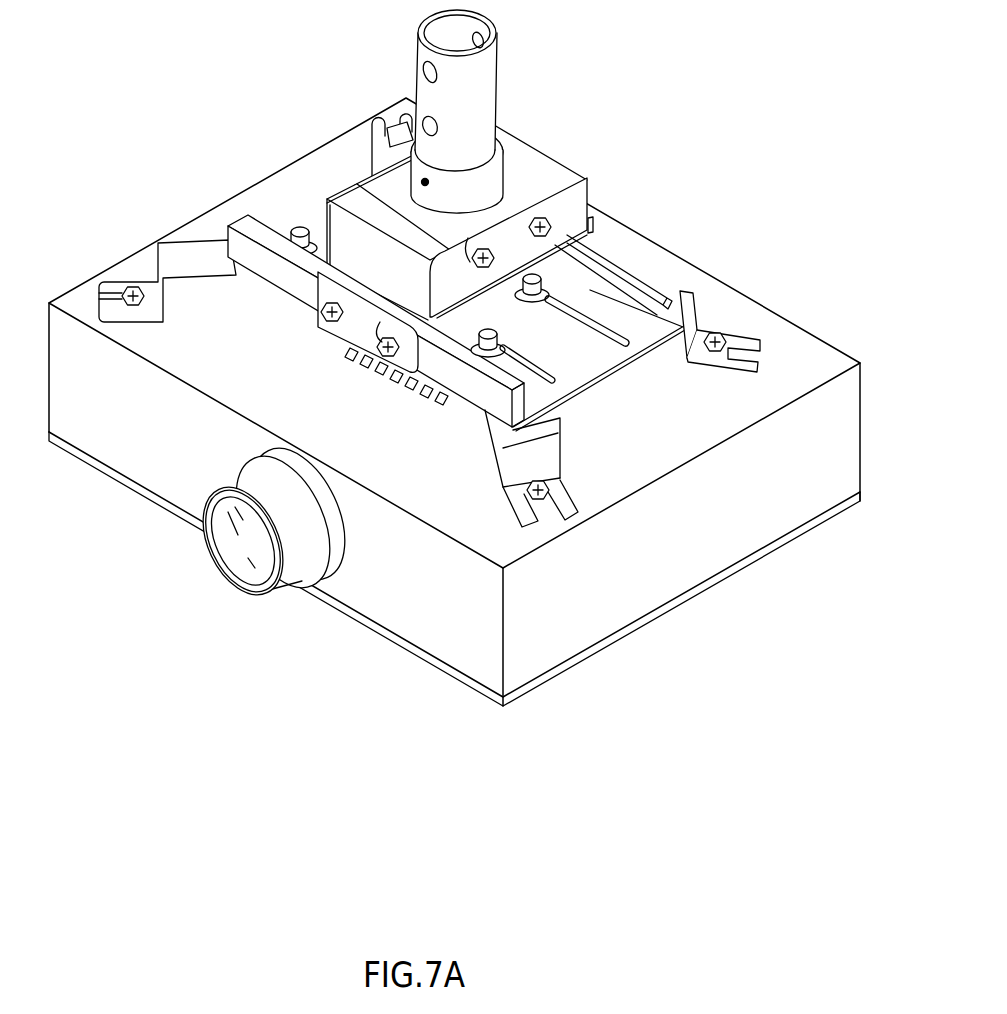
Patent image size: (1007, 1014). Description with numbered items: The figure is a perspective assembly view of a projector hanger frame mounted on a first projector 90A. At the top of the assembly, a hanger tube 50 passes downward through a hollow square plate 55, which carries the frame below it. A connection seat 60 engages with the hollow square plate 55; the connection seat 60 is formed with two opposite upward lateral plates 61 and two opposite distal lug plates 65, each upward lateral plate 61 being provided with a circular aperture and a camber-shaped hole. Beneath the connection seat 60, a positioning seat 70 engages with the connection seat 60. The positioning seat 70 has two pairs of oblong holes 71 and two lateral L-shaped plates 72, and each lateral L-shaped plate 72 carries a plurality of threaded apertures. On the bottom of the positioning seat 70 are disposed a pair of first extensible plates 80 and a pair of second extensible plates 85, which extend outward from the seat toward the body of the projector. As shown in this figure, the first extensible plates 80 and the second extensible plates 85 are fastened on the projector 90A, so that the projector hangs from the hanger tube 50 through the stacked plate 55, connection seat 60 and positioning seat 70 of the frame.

The hanger tube 50 is at (492, 81).
The hollow square plate 55 is at (531, 184).
The connection seat 60 is at (343, 248).
The upward lateral plate 61 is at (365, 332).
The distal lug plate 65 is at (579, 207).
The positioning seat 70 is at (637, 327).
The oblong hole 71 is at (605, 342).
The lateral L-shaped plate 72 is at (640, 272).
The first extensible plate 80 is at (383, 148).
The second extensible plate 85 is at (503, 189).
The projector 90A is at (430, 628).